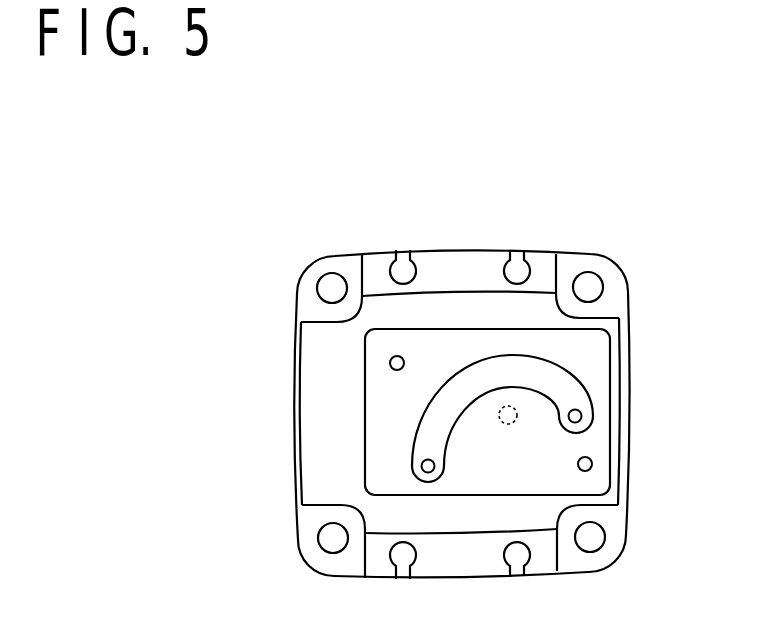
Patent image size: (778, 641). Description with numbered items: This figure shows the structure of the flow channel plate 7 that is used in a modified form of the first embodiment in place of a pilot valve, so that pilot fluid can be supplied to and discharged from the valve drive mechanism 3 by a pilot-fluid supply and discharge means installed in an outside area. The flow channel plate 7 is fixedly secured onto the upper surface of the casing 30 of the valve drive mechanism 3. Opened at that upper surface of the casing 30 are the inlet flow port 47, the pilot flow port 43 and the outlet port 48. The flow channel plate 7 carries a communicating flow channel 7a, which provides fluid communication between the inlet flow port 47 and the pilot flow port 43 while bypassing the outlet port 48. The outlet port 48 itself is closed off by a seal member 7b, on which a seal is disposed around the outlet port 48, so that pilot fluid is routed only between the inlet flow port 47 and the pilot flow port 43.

The valve drive mechanism 3 is at (363, 235).
The casing 30 is at (484, 250).
The flow channel plate 7 is at (615, 385).
The communicating flow channel 7a is at (453, 390).
The seal member 7b is at (525, 417).
The pilot flow port 43 is at (579, 418).
The inlet flow port 47 is at (427, 465).
The outlet port 48 is at (505, 424).